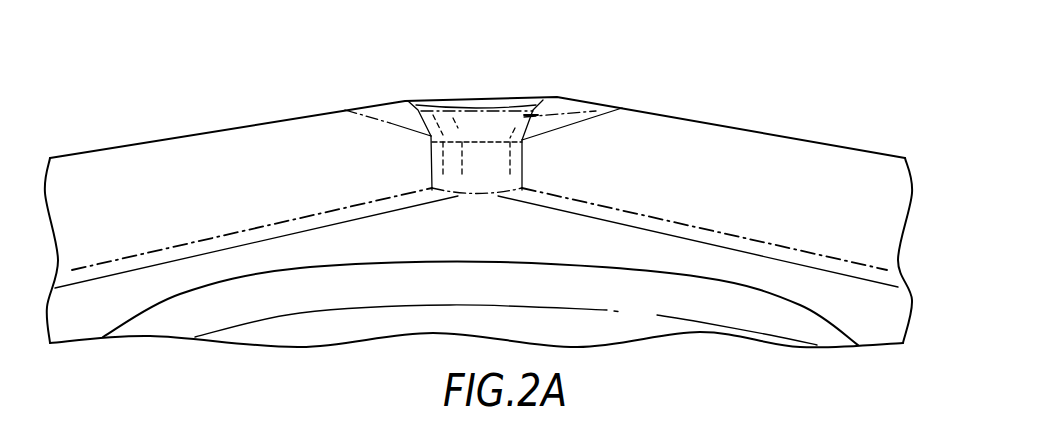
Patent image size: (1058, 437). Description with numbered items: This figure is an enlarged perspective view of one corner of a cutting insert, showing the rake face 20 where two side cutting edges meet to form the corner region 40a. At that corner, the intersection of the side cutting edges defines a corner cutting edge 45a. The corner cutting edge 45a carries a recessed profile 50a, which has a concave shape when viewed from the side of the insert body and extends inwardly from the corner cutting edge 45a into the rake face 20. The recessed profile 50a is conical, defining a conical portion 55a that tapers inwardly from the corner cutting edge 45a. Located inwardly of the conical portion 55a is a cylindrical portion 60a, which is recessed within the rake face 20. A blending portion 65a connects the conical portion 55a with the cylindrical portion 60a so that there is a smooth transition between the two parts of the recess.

The rake face 20 is at (185, 146).
The corner region 40a is at (483, 100).
The corner cutting edge 45a is at (428, 100).
The conical portion 55a is at (447, 104).
The recessed profile 50a is at (492, 103).
The blending portion 65a is at (526, 115).
The cylindrical portion 60a is at (485, 165).